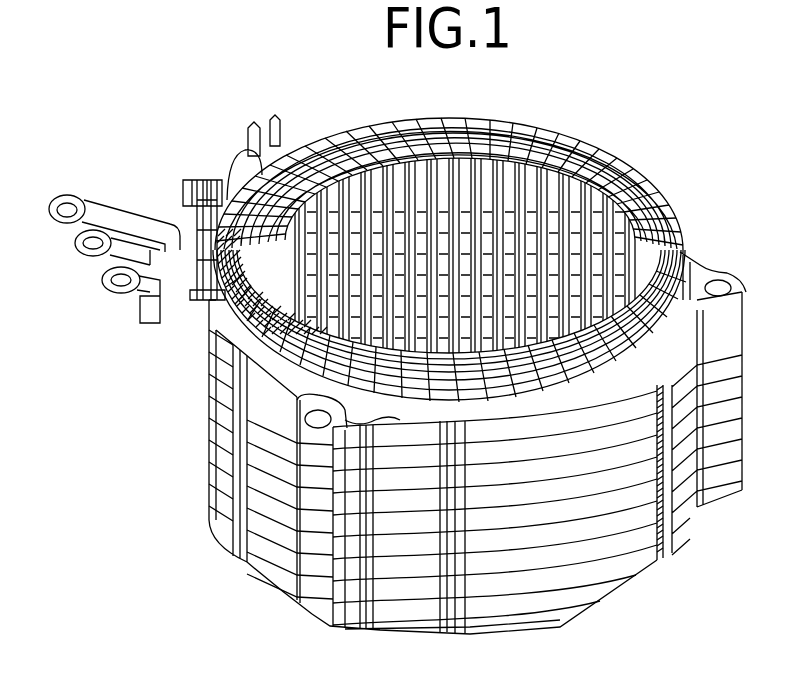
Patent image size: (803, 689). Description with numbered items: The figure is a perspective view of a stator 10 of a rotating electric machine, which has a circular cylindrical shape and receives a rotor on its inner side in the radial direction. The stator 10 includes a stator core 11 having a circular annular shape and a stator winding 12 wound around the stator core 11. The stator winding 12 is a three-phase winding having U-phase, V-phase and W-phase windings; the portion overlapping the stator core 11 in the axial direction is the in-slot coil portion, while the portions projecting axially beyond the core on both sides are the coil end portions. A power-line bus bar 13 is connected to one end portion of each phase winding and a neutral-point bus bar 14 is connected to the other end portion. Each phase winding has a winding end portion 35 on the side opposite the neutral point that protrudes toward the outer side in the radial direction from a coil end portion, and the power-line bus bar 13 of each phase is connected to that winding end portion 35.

The stator 10 is at (650, 131).
The stator core 11 is at (683, 248).
The stator winding 12 is at (545, 128).
The power-line bus bar 13 is at (140, 240).
The neutral-point bus bar 14 is at (208, 385).
The winding end portion 35 is at (280, 150).